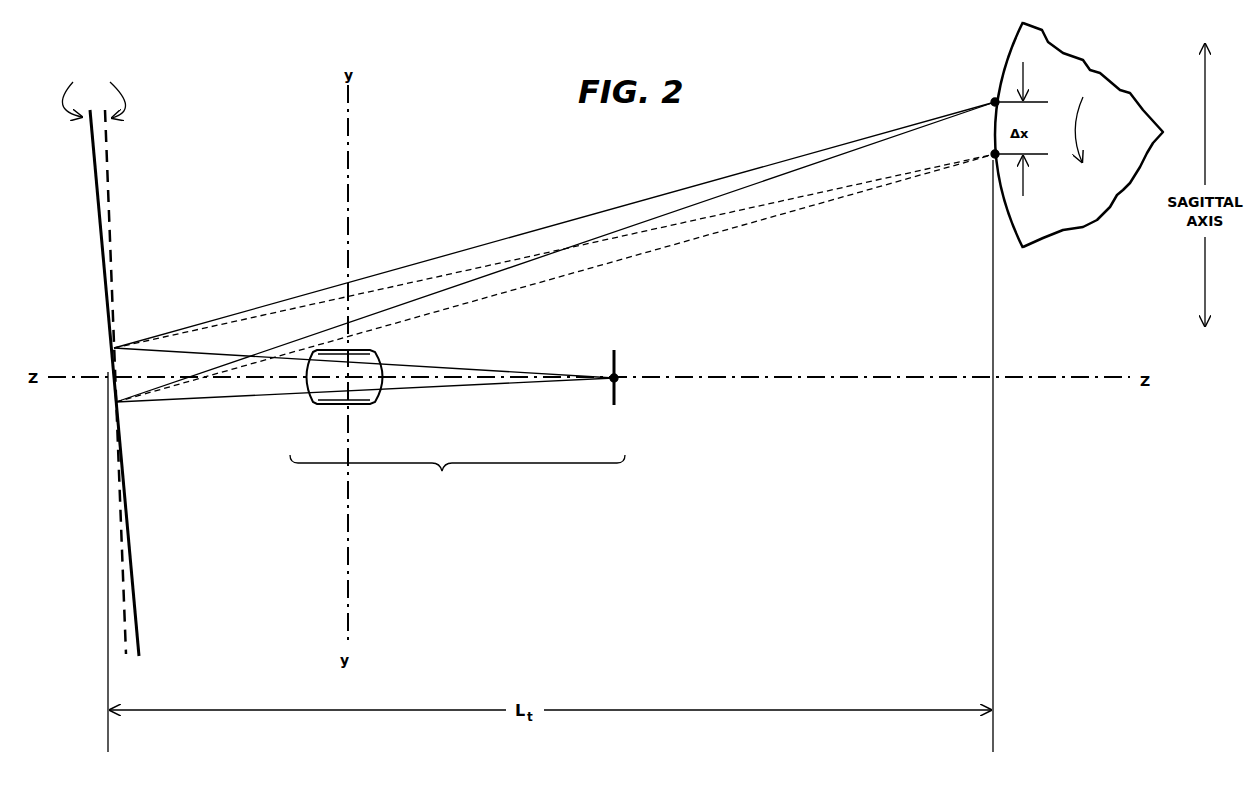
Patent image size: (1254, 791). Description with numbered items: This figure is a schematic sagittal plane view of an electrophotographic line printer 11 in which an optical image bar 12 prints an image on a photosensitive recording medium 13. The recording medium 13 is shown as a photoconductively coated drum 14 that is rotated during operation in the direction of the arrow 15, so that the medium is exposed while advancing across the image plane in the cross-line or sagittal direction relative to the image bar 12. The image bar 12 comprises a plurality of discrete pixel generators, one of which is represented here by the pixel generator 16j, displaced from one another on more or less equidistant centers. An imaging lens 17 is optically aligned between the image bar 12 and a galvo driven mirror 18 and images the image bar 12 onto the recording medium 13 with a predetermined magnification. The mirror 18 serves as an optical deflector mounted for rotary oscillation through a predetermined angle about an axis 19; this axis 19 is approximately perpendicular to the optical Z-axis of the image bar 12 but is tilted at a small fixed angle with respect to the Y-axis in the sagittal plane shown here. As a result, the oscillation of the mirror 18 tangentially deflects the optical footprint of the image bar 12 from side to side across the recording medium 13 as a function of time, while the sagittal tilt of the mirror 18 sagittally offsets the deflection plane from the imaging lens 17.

The electrophotographic line printer 11 is at (88, 621).
The optical image bar 12 is at (457, 478).
The photosensitive recording medium 13 is at (1003, 60).
The photoconductively coated drum 14 is at (1070, 208).
The arrow 15 is at (1078, 129).
The pixel generator 16j is at (617, 381).
The imaging lens 17 is at (322, 406).
The galvo driven mirror 18 is at (97, 204).
The axis 19 is at (106, 182).